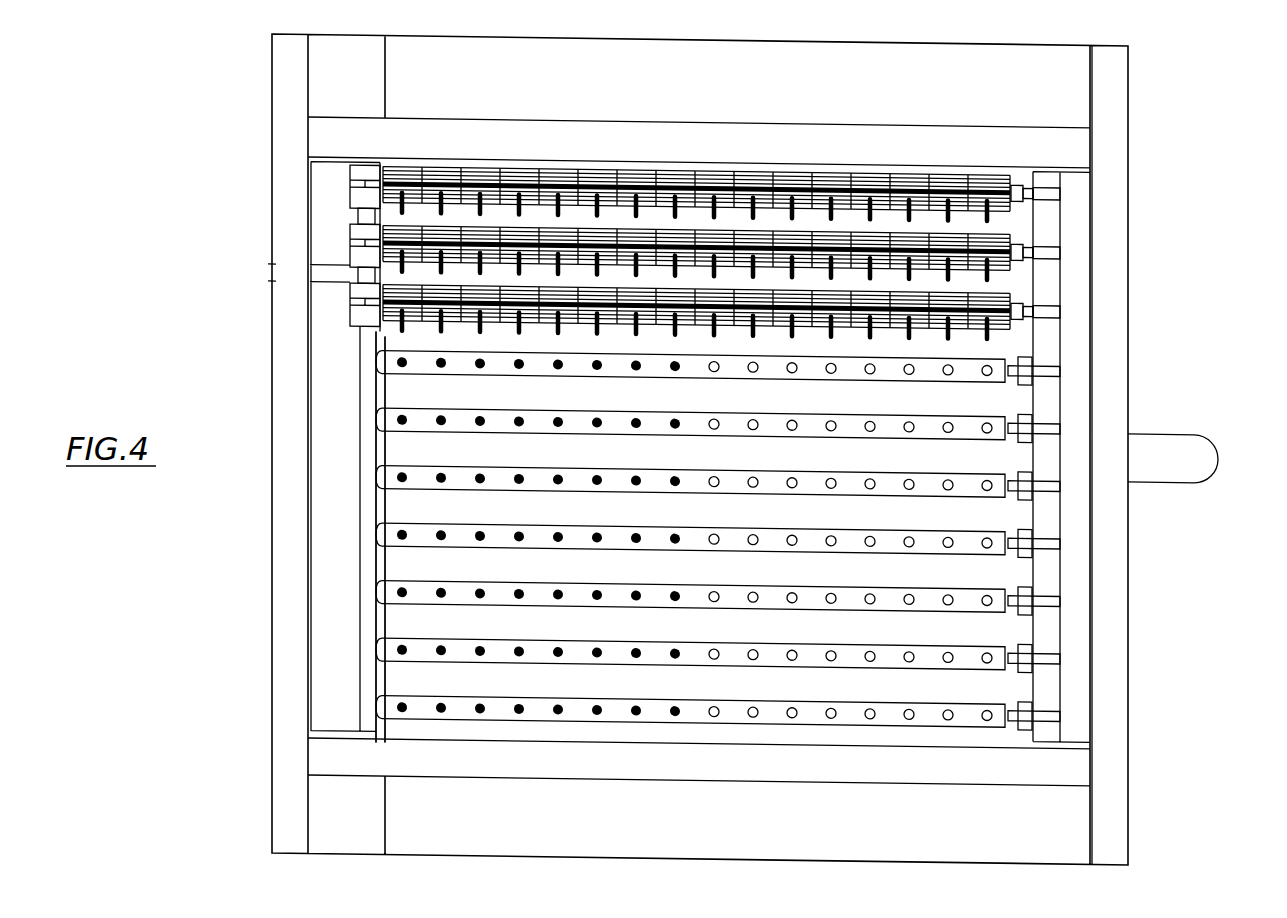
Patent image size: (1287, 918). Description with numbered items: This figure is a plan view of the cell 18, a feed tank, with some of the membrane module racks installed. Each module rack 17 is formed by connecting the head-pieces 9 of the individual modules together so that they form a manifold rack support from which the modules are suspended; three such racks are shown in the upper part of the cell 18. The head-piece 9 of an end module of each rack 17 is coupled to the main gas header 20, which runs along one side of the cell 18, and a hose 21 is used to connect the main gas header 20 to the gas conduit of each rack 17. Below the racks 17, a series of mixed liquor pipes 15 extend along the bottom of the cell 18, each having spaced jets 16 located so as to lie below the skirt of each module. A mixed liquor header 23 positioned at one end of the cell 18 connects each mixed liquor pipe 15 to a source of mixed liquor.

The head-piece 9 is at (560, 179).
The mixed liquor pipe 15 is at (718, 771).
The jet 16 is at (597, 710).
The module rack 17 is at (760, 150).
The cell 18 is at (1162, 609).
The main gas header 20 is at (1075, 254).
The hose 21 is at (1052, 311).
The mixed liquor header 23 is at (372, 701).